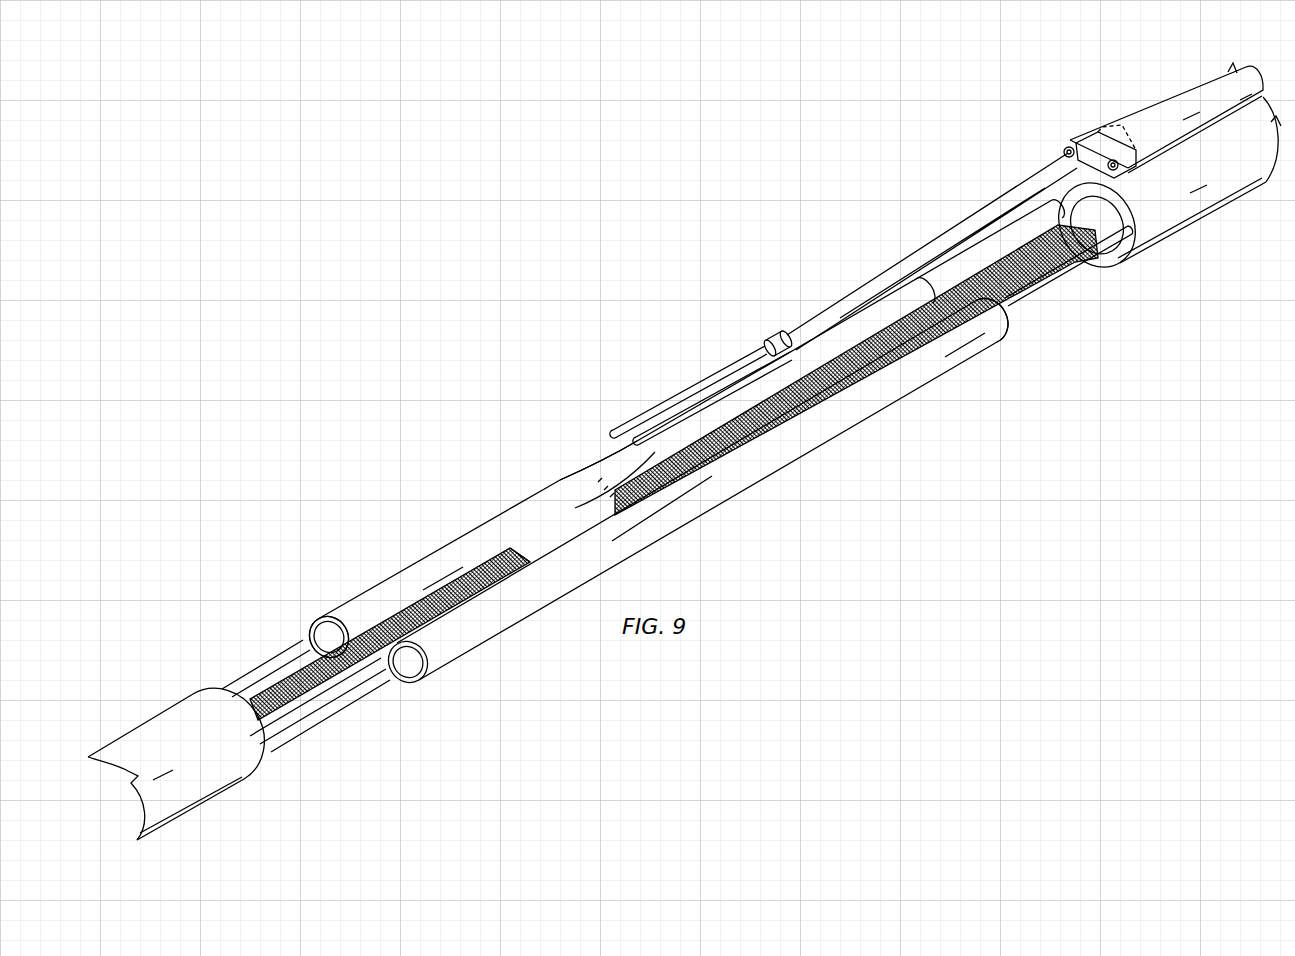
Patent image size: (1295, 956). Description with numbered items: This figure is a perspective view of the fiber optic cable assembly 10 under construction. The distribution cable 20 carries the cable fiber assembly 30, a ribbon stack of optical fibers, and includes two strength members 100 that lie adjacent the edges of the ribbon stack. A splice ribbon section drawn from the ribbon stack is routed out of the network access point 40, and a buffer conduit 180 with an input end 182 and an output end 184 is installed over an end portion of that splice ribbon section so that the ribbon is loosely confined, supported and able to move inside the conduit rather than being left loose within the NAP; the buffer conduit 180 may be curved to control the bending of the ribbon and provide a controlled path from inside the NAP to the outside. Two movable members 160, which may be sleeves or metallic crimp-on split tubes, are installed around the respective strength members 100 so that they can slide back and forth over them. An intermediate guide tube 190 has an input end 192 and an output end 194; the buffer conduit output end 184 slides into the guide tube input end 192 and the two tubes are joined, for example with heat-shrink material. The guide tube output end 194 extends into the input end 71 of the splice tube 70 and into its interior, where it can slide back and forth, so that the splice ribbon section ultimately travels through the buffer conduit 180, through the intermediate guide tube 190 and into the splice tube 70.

The fiber optic cable assembly 10 is at (608, 298).
The distribution cable 20 is at (1193, 225).
The cable fiber assembly 30 is at (340, 622).
The network access point 40 is at (995, 372).
The splice tube 70 is at (1163, 100).
The input end of splice tube 71 is at (1066, 150).
The strength members 100 is at (1075, 284).
The movable members 160 is at (880, 398).
The buffer conduit 180 is at (638, 475).
The input end of buffer conduit 182 is at (492, 562).
The output end of buffer conduit 184 is at (776, 342).
The intermediate guide tube 190 is at (833, 307).
The input end of intermediate guide tube 192 is at (765, 347).
The output end of intermediate guide tube 194 is at (1120, 132).